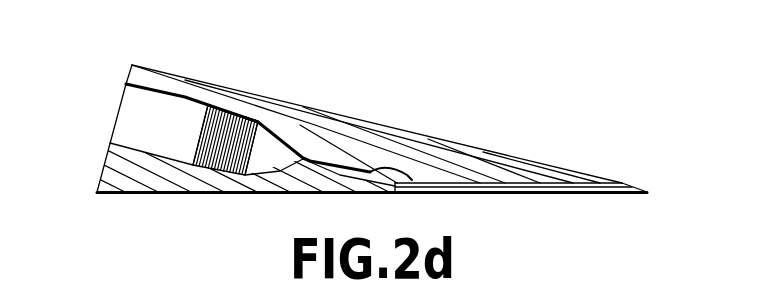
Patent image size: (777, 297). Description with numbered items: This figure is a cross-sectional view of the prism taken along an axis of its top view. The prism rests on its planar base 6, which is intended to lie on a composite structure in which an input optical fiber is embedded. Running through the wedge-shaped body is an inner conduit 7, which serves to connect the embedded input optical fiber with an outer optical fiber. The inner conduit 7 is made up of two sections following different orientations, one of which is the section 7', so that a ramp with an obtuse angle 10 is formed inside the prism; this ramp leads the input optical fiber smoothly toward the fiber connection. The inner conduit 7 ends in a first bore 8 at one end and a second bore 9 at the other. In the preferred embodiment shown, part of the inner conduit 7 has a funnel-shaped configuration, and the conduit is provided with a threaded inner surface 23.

The second bore 9 is at (118, 117).
The inner conduit 7 is at (260, 97).
The threaded inner surface 23 is at (240, 113).
The obtuse angle 10 is at (390, 163).
The first section of the inner conduit 7' is at (451, 113).
The first bore 8 is at (618, 185).
The planar base 6 is at (282, 187).